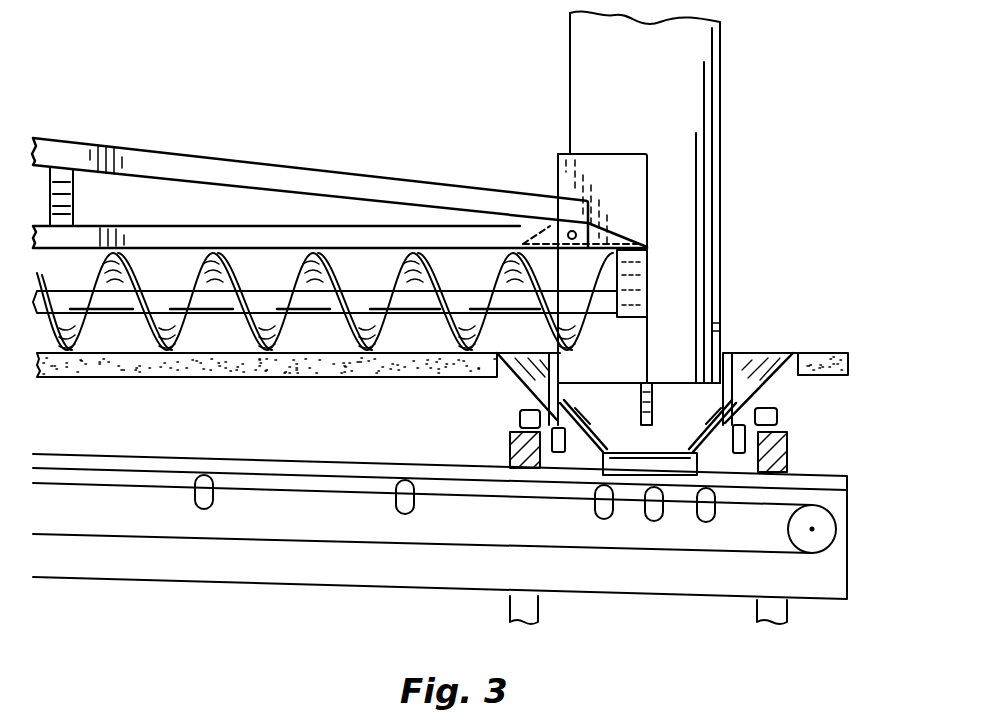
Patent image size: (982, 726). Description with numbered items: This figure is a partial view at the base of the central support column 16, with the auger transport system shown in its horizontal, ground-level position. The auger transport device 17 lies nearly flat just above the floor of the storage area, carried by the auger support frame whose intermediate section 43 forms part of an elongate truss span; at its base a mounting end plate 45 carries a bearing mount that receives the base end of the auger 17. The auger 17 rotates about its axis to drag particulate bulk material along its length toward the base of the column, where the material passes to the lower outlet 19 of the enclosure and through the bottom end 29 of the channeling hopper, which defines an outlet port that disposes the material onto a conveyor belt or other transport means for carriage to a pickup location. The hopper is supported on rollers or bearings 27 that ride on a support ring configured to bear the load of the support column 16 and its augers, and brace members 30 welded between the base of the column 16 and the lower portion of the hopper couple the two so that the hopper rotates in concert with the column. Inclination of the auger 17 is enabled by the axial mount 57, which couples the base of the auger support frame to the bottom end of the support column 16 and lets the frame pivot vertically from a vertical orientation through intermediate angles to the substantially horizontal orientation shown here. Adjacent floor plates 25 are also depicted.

The support column 16 is at (690, 55).
The auger transport device 17 is at (280, 340).
The lower outlet 19 is at (690, 412).
The plate 25 is at (110, 366).
The rollers or bearings 27 is at (520, 416).
The bottom end 29 is at (703, 473).
The brace member 30 is at (733, 377).
The intermediate section 43 is at (210, 168).
The mounting end plate 45 is at (648, 300).
The axial mount 57 is at (563, 224).